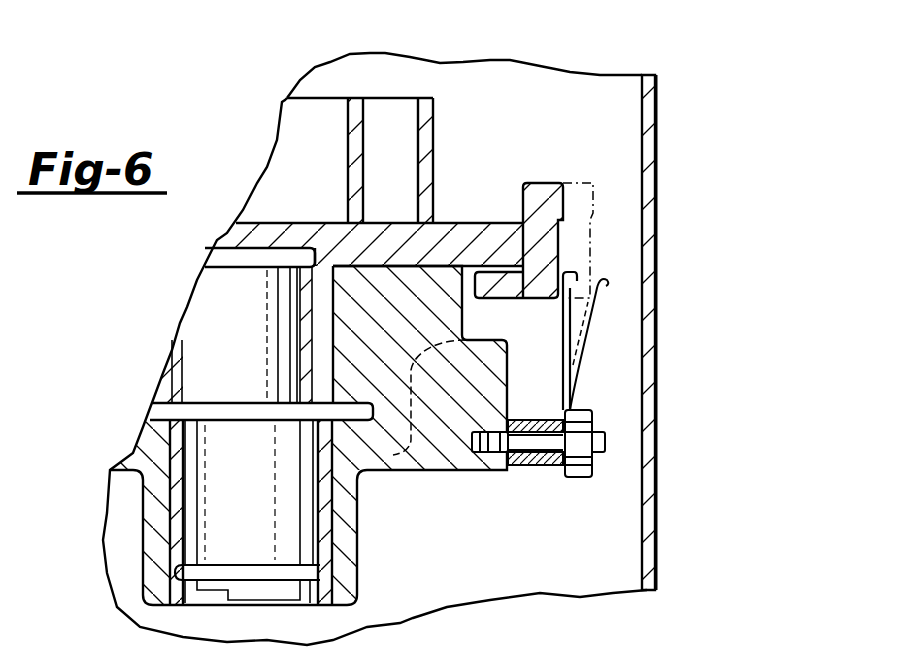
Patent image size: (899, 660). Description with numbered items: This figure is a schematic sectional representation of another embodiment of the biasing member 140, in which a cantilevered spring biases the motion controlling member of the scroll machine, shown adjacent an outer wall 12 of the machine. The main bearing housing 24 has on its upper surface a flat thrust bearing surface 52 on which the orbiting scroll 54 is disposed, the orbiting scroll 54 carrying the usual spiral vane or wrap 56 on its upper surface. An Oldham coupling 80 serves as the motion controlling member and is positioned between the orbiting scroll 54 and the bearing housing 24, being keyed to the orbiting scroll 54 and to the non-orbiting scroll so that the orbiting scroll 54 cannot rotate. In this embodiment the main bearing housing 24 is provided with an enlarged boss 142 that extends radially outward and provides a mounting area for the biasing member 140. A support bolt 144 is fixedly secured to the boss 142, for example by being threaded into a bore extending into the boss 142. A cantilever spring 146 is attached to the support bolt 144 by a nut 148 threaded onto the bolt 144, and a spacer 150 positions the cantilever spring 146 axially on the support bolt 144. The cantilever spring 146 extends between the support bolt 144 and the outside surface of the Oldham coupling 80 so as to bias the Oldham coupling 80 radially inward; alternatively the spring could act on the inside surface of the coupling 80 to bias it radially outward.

The wall panel 12 is at (653, 181).
The main bearing housing 24 is at (163, 547).
The flat thrust bearing surface 52 is at (336, 266).
The orbiting scroll 54 is at (456, 236).
The spiral vane or wrap 56 is at (435, 122).
The Oldham coupling 80 is at (570, 276).
The biasing member 140 is at (293, 81).
The enlarged boss 142 is at (442, 450).
The support bolt 144 is at (528, 472).
The cantilever spring 146 is at (583, 333).
The nut 148 is at (590, 418).
The spacer 150 is at (548, 462).